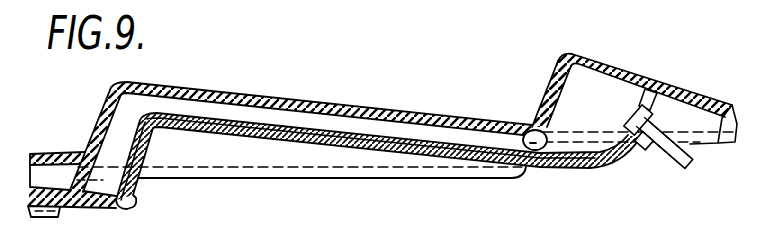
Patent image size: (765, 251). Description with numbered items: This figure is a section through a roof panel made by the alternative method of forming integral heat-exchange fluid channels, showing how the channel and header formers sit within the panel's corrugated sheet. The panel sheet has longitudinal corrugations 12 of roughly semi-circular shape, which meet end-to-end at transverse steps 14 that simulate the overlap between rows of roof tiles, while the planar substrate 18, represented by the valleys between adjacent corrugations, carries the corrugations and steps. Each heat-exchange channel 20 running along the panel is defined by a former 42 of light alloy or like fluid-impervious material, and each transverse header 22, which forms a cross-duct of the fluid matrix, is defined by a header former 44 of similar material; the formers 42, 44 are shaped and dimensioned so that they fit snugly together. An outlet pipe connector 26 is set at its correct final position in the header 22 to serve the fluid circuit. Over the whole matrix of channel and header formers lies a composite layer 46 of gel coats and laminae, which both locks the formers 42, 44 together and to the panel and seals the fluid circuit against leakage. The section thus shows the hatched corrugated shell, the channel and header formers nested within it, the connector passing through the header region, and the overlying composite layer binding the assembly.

The longitudinal corrugation 12 is at (74, 140).
The transverse step 14 is at (100, 107).
The substrate 18 is at (60, 210).
The channel 20 is at (167, 104).
The header 22 is at (603, 121).
The outlet pipe connector 26 is at (673, 160).
The channel former 42 is at (43, 154).
The header former 44 is at (537, 128).
The composite layer 46 is at (180, 158).